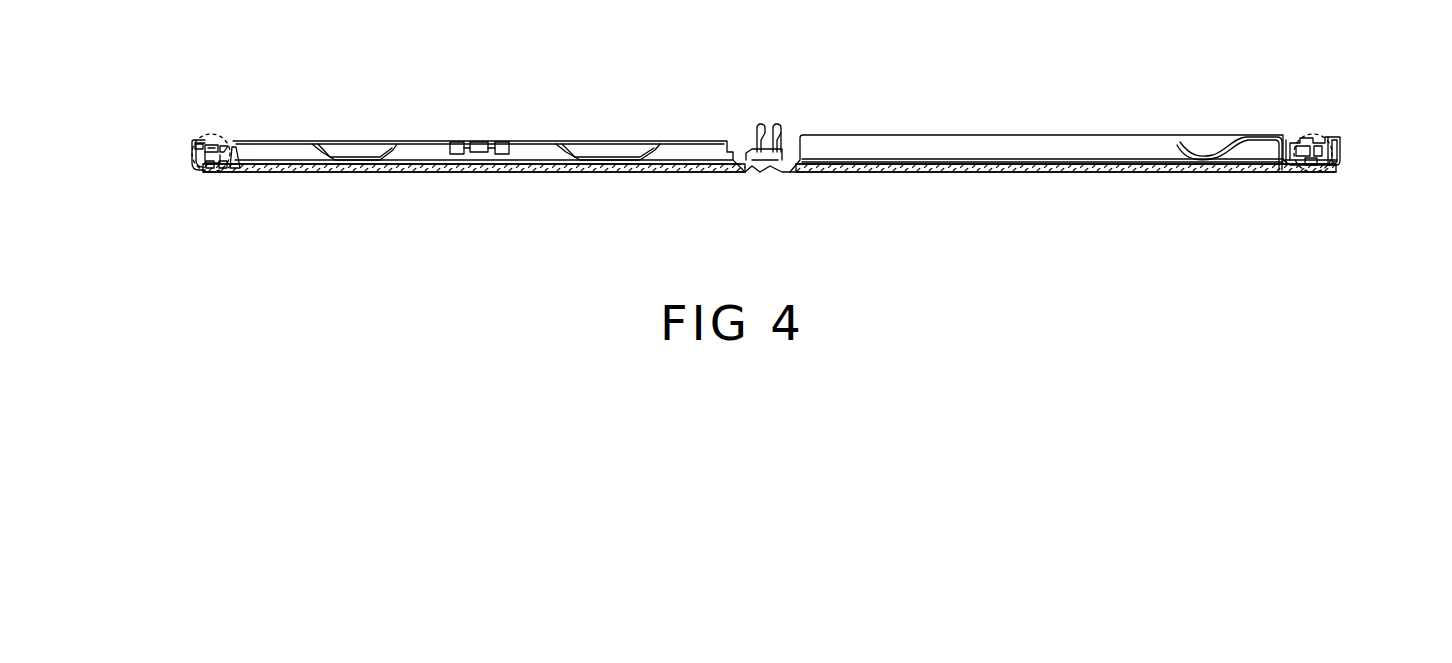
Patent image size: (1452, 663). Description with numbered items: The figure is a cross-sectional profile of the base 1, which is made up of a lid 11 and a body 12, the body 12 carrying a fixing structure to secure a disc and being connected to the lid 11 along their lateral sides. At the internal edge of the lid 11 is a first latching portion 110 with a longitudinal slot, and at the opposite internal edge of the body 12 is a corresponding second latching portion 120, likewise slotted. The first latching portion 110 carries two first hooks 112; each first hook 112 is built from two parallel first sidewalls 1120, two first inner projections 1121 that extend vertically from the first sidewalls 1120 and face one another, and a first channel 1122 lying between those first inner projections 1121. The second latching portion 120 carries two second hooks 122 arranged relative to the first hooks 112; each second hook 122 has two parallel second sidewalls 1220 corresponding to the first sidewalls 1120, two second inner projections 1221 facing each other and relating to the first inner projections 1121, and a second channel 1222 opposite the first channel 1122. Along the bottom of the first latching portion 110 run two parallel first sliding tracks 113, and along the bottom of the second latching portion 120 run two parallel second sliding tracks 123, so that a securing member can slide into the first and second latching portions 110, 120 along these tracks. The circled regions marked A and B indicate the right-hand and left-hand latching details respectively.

The base 1 is at (697, 125).
The lid 11 is at (1082, 178).
The first latching portion 110 is at (1330, 170).
The first hook 112 is at (1313, 130).
The first sidewall 1120 is at (1335, 155).
The first inner projection 1121 is at (1330, 140).
The first channel 1122 is at (1298, 145).
The first sliding track 113 is at (1316, 175).
The body 12 is at (450, 178).
The second latching portion 120 is at (192, 157).
The second hook 122 is at (220, 138).
The second sidewall 1220 is at (212, 170).
The second inner projection 1221 is at (197, 149).
The second channel 1222 is at (235, 142).
The second sliding track 123 is at (222, 178).
The detail region A is at (1308, 128).
The detail region B is at (197, 130).